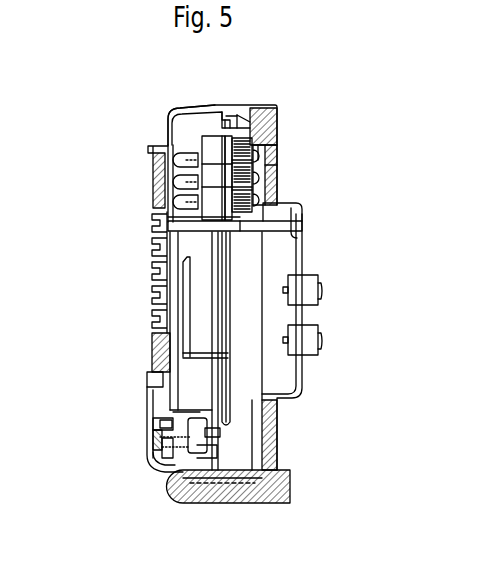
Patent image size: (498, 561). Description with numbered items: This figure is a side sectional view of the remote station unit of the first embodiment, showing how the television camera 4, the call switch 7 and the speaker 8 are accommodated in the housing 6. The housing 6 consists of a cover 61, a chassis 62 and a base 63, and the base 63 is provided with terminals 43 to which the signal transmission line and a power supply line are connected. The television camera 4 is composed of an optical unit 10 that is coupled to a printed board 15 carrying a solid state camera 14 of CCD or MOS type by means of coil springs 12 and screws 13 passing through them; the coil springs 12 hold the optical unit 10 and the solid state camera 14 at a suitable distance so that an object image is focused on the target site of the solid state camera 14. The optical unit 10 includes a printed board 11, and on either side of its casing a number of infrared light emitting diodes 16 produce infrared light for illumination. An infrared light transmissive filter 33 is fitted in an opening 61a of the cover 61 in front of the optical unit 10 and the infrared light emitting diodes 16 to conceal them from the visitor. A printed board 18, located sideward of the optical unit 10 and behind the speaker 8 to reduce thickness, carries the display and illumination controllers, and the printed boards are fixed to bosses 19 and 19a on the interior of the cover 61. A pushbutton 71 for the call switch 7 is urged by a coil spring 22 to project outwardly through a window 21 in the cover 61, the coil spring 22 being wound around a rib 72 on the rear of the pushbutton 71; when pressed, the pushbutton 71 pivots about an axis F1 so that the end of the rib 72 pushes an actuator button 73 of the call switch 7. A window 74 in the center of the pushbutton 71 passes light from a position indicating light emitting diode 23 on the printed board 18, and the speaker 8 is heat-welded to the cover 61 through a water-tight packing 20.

The cover 61 is at (178, 109).
The optical unit 10 is at (207, 150).
The television camera 4 is at (224, 124).
The chassis 62 is at (252, 120).
The coil springs 12 is at (268, 124).
The printed board 15 is at (276, 138).
The base 63 is at (281, 149).
The screws 13 is at (270, 180).
The opening 61a is at (152, 153).
The infrared light transmissive filter 33 is at (152, 174).
The infrared light emitting diodes 16 is at (178, 202).
The printed board 11 is at (152, 230).
The solid state camera 14 is at (302, 213).
The boss 19 is at (252, 229).
The speaker 8 is at (187, 300).
The terminals 43 is at (312, 328).
The water-tight packing 20 is at (162, 334).
The axis F1 is at (152, 380).
The pushbutton 71 is at (150, 392).
The printed board 18 is at (250, 388).
The window 74 is at (153, 427).
The boss 19a is at (268, 400).
The position indicating light emitting diode 23 is at (150, 437).
The rib 72 is at (148, 455).
The window 21 is at (157, 465).
The coil spring 22 is at (170, 450).
The actuator button 73 is at (180, 498).
The call switch 7 is at (203, 500).
The housing 6 is at (279, 503).